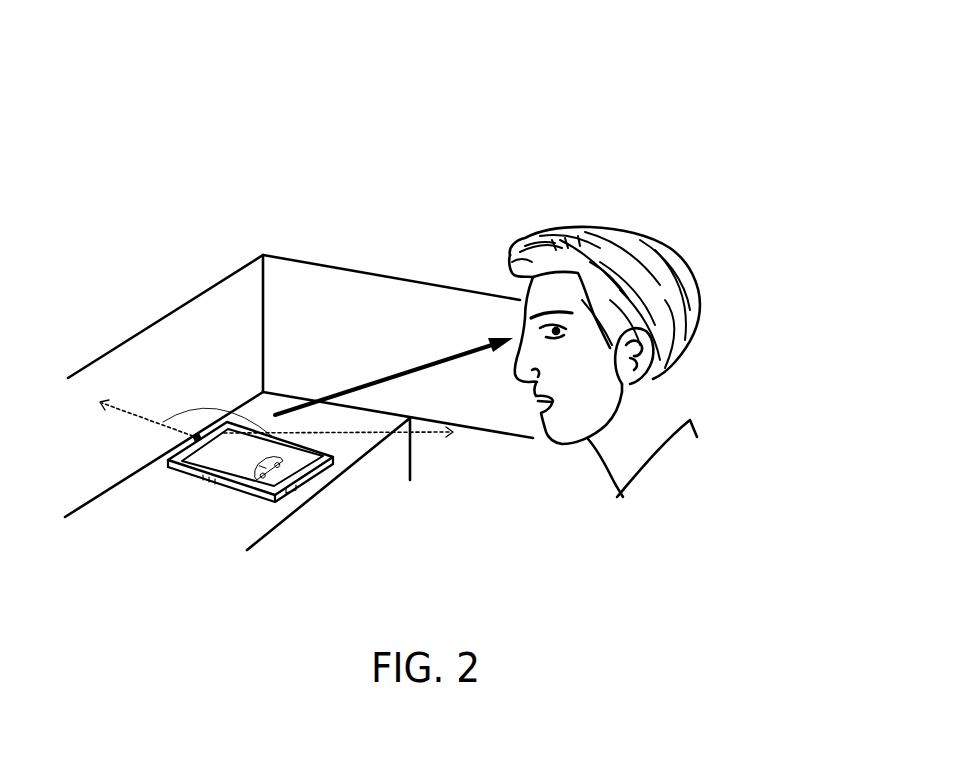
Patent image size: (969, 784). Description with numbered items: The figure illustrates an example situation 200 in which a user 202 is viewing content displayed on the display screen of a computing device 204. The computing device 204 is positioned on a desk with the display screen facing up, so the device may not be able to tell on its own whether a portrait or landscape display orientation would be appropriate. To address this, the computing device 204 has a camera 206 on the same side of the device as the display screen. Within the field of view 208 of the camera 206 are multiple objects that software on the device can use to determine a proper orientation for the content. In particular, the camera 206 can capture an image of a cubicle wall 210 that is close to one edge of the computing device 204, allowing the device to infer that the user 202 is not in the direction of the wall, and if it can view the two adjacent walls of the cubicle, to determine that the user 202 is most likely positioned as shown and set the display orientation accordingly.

The example situation 200 is at (664, 81).
The user 202 is at (710, 247).
The computing device 204 is at (234, 486).
The camera 206 is at (186, 438).
The field of view 208 is at (234, 402).
The cubicle wall 210 is at (229, 348).